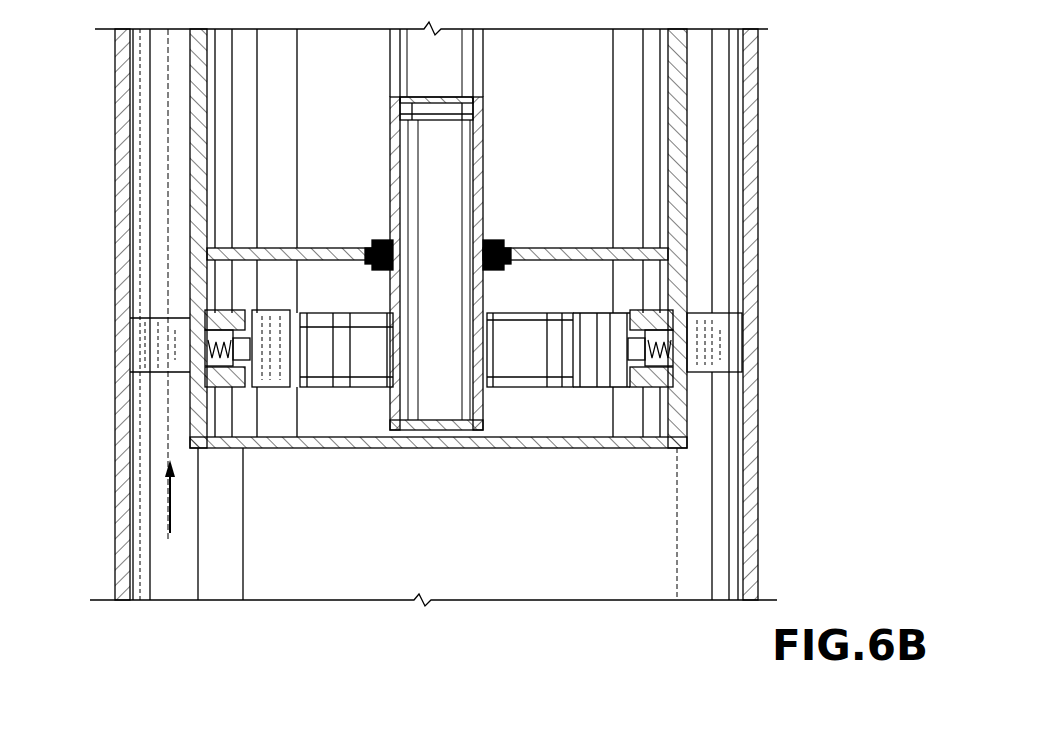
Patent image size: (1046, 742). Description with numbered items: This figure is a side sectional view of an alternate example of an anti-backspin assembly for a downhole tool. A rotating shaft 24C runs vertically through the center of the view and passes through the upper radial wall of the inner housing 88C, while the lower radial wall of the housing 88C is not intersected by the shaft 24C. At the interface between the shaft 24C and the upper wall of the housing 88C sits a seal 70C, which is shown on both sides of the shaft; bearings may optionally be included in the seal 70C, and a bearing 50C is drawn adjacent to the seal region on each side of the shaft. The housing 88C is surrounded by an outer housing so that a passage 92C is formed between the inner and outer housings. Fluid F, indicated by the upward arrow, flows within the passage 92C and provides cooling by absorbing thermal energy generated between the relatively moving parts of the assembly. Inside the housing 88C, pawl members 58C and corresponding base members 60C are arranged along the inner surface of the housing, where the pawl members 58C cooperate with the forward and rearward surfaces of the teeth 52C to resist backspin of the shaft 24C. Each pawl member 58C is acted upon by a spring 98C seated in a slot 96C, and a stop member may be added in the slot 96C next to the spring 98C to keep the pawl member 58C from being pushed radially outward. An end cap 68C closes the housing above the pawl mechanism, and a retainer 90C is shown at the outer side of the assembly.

The shaft 24C is at (481, 72).
The bearing 50C is at (550, 387).
The teeth 52C is at (613, 303).
The pawl member 58C is at (207, 388).
The base member 60C is at (675, 320).
The end cap 68C is at (620, 273).
The seal 70C is at (497, 226).
The inner housing 88C is at (190, 290).
The retainer 90C is at (727, 350).
The passage 92C is at (156, 126).
The slot 96C is at (203, 382).
The spring 98C is at (210, 346).
The fluid F is at (168, 508).